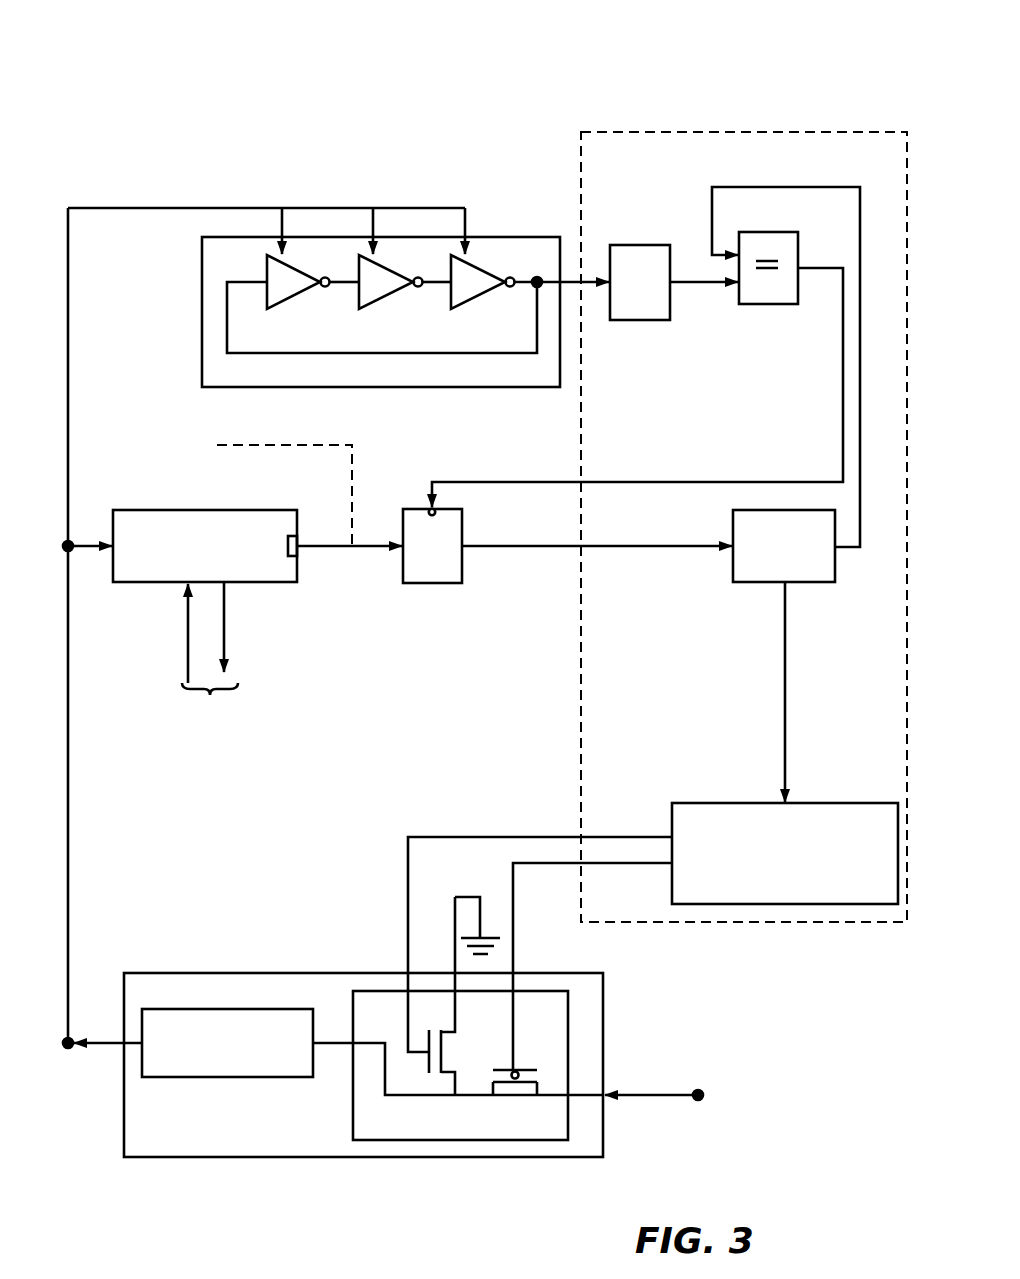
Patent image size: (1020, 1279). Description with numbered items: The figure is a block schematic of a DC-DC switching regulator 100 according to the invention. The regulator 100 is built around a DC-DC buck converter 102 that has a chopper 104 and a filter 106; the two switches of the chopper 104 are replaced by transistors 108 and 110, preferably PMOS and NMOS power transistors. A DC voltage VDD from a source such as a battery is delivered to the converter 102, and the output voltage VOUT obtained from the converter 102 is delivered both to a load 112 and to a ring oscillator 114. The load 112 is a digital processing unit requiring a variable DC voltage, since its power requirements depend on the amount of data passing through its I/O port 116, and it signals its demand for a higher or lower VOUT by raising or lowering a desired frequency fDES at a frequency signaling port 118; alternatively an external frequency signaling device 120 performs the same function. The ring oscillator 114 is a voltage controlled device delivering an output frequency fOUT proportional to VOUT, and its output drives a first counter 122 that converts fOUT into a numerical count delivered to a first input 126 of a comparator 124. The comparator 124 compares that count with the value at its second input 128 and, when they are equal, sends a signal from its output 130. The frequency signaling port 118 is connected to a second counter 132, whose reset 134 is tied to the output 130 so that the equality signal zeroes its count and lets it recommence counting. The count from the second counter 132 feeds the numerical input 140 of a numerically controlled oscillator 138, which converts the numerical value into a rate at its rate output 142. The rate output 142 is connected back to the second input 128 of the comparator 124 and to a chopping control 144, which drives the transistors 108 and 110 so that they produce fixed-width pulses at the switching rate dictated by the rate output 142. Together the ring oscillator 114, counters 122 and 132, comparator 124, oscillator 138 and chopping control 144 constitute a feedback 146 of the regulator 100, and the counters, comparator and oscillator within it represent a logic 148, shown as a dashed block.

The DC-DC switching regulator 100 is at (175, 108).
The DC-DC buck converter 102 is at (604, 1005).
The chopper 104 is at (604, 1118).
The filter 106 is at (220, 1078).
The transistor 108 is at (510, 1086).
The transistor 110 is at (418, 1068).
The load 112 is at (118, 508).
The ring oscillator 114 is at (200, 345).
The I/O port 116 is at (210, 697).
The frequency signaling port 118 is at (299, 556).
The frequency signaling device 120 is at (215, 445).
The first counter 122 is at (628, 322).
The comparator 124 is at (764, 306).
The first input 126 is at (735, 288).
The second input 128 is at (733, 248).
The output 130 is at (800, 268).
The second counter 132 is at (430, 585).
The reset 134 is at (437, 509).
The numerically controlled oscillator 138 is at (767, 584).
The numerical input 140 is at (733, 552).
The rate output 142 is at (836, 548).
The chopping control 144 is at (708, 803).
The feedback 146 is at (388, 178).
The logic 148 is at (733, 131).